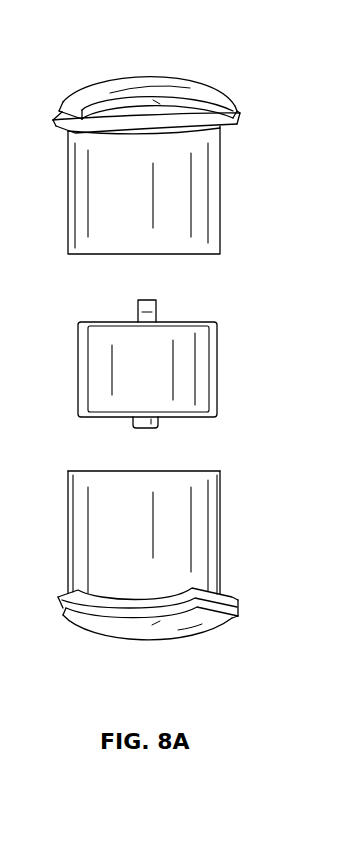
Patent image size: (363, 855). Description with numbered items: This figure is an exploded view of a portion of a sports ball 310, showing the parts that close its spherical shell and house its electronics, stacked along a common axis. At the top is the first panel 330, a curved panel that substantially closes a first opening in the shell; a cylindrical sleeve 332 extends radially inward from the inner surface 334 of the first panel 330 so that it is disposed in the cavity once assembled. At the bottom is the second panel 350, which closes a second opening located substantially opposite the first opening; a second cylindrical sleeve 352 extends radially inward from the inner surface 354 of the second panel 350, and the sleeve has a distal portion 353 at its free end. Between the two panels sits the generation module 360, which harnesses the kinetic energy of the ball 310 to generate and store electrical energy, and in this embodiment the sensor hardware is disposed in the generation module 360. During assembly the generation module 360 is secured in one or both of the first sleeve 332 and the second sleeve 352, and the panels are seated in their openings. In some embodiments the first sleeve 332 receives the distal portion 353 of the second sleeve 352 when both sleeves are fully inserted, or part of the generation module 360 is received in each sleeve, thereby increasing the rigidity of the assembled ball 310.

The ball 310 is at (183, 148).
The first panel 330 is at (187, 92).
The inner surface 334 is at (238, 121).
The cylindrical sleeve 332 is at (221, 207).
The generation module 360 is at (210, 359).
The second panel 350 is at (175, 548).
The cylindrical sleeve 352 is at (222, 512).
The distal portion 353 is at (200, 471).
The inner surface 354 is at (175, 591).